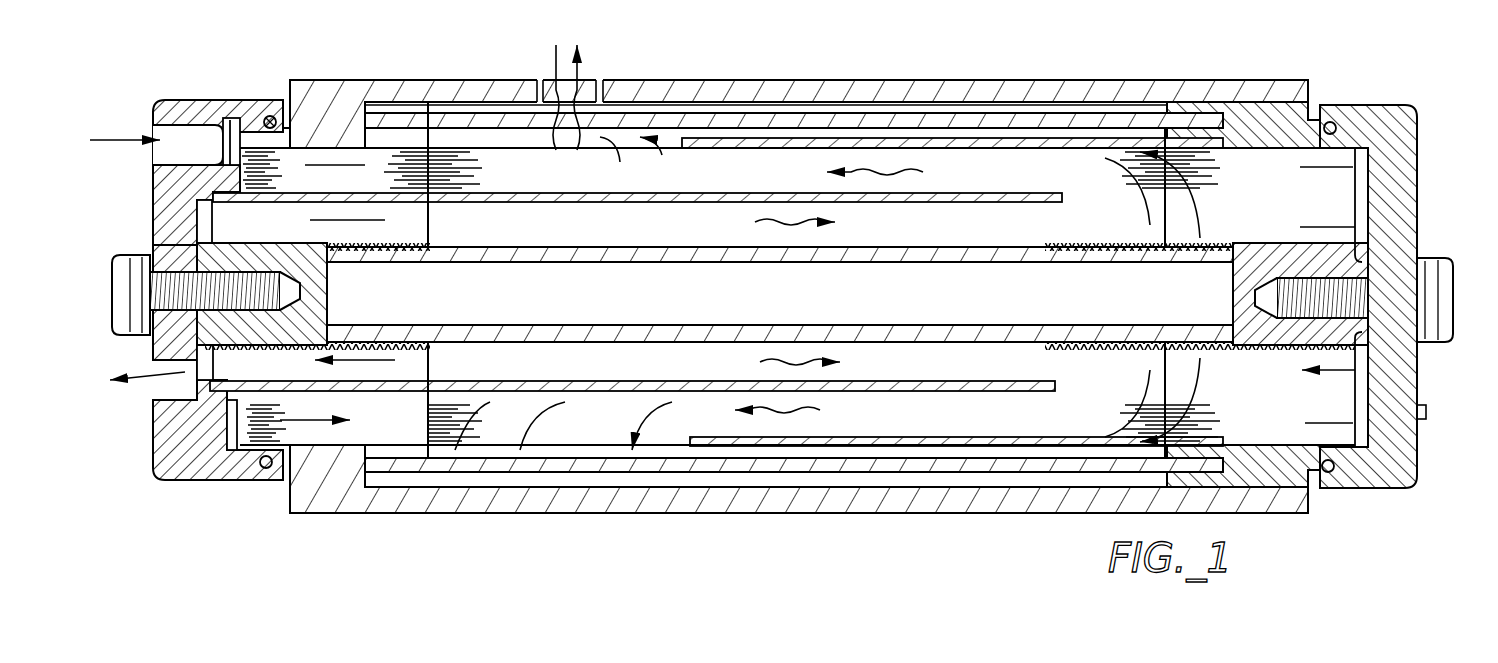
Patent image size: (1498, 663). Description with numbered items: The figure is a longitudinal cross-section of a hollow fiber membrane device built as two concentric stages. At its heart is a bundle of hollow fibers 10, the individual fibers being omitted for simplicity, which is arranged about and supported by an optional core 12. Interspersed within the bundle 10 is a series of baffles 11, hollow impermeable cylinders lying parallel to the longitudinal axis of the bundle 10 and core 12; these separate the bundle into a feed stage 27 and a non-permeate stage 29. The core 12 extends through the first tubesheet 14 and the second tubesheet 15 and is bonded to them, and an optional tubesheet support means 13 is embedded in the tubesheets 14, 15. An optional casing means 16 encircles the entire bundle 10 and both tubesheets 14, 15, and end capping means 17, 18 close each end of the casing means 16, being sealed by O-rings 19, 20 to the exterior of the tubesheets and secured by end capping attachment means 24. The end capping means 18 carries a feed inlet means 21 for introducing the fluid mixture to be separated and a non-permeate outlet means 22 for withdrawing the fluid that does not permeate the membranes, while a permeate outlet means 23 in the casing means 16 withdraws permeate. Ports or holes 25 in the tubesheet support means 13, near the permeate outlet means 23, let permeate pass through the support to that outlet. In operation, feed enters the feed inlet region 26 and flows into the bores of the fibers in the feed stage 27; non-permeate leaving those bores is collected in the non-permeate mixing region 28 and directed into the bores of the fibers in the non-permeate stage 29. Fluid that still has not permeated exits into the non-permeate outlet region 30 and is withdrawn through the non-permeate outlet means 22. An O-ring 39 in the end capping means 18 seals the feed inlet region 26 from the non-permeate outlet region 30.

The bundle of hollow fibers 10 is at (532, 180).
The baffles 11 is at (1002, 220).
The core 12 is at (493, 345).
The tubesheet support means 13 is at (665, 475).
The first tubesheet 14 is at (1290, 500).
The second tubesheet 15 is at (330, 432).
The casing means 16 is at (838, 78).
The end capping means 17 is at (1425, 120).
The end capping means 18 is at (153, 205).
The O-ring 19 is at (1333, 120).
The O-ring 20 is at (275, 115).
The feed inlet means 21 is at (158, 140).
The non-permeate outlet means 22 is at (175, 388).
The permeate outlet means 23 is at (596, 68).
The end capping attachment means 24 is at (140, 255).
The ports or holes 25 is at (592, 120).
The feed inlet region 26 is at (243, 125).
The feed stage 27 is at (478, 152).
The non-permeate mixing region 28 is at (1365, 148).
The non-permeate stage 29 is at (1035, 143).
The non-permeate outlet region 30 is at (197, 350).
The O-ring 39 is at (233, 140).